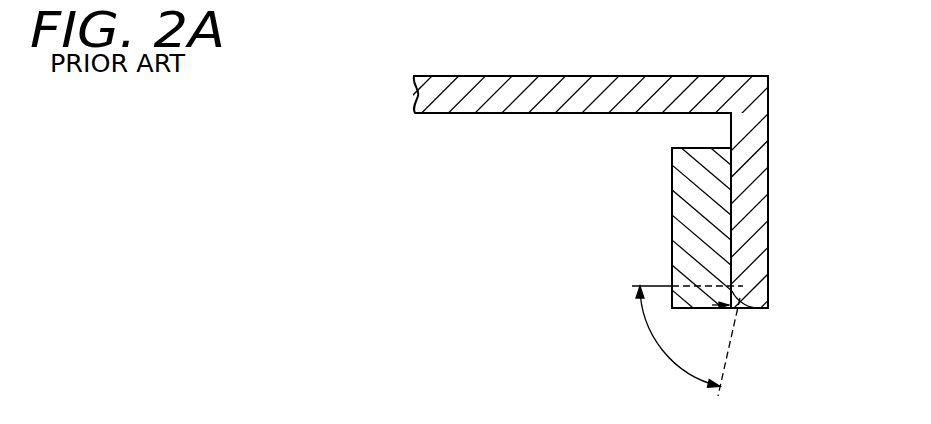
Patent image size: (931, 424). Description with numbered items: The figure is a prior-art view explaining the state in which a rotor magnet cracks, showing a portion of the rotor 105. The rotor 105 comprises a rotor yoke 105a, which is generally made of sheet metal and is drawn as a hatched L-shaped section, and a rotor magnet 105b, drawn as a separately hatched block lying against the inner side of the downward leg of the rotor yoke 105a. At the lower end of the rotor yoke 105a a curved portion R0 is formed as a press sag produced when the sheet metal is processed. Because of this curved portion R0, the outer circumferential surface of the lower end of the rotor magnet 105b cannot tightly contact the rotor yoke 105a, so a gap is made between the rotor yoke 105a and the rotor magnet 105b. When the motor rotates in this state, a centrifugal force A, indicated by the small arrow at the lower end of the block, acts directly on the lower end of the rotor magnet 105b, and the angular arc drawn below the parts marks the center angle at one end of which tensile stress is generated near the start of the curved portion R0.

The rotor 105 is at (370, 104).
The rotor yoke 105a is at (582, 92).
The rotor magnet 105b is at (718, 198).
The centrifugal force A is at (687, 341).
The curved portion R0 is at (750, 306).